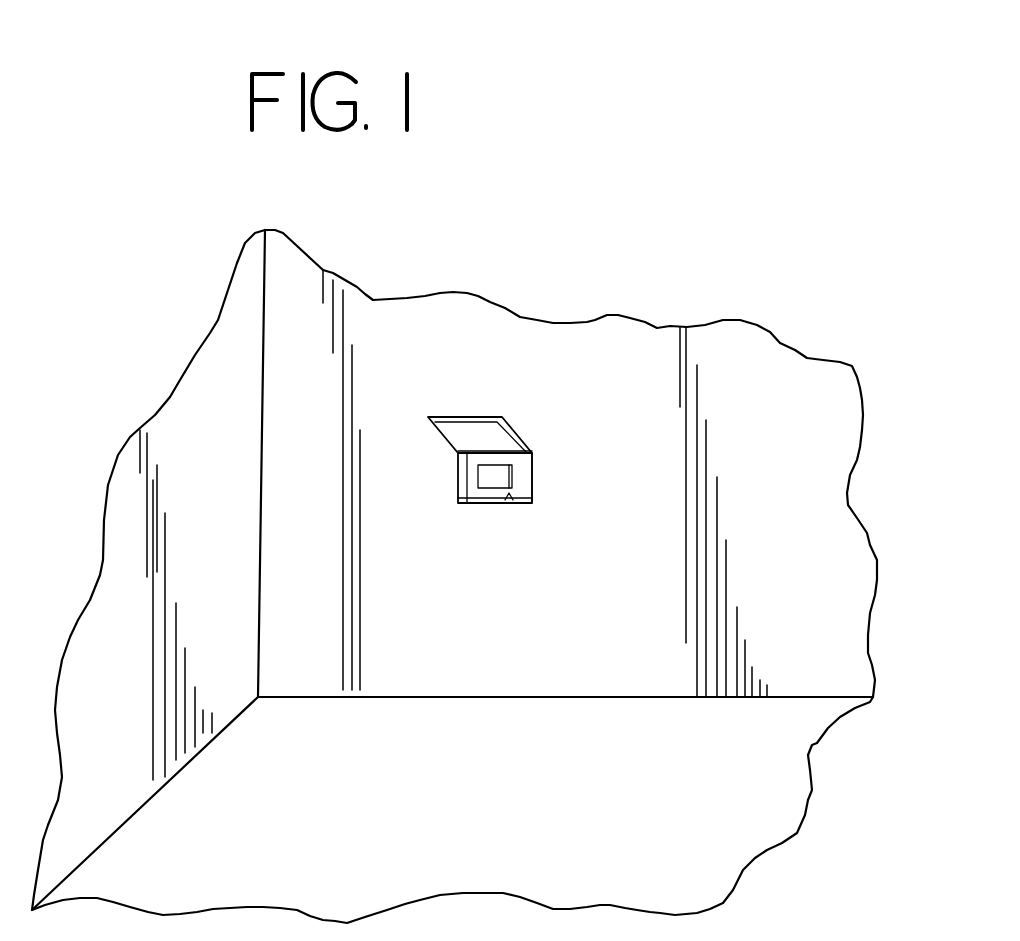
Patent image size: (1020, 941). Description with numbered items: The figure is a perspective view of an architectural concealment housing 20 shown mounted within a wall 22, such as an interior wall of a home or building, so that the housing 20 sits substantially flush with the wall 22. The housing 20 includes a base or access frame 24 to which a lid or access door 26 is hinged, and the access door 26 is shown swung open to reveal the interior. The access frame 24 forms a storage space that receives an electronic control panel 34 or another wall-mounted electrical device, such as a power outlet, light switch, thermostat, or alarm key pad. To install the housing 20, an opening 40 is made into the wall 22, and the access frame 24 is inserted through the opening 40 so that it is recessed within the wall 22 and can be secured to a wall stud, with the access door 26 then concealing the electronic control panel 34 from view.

The architectural concealment housing 20 is at (575, 415).
The wall 22 is at (813, 428).
The access frame 24 is at (515, 500).
The access door 26 is at (466, 432).
The electronic control panel 34 is at (488, 478).
The opening 40 is at (533, 480).